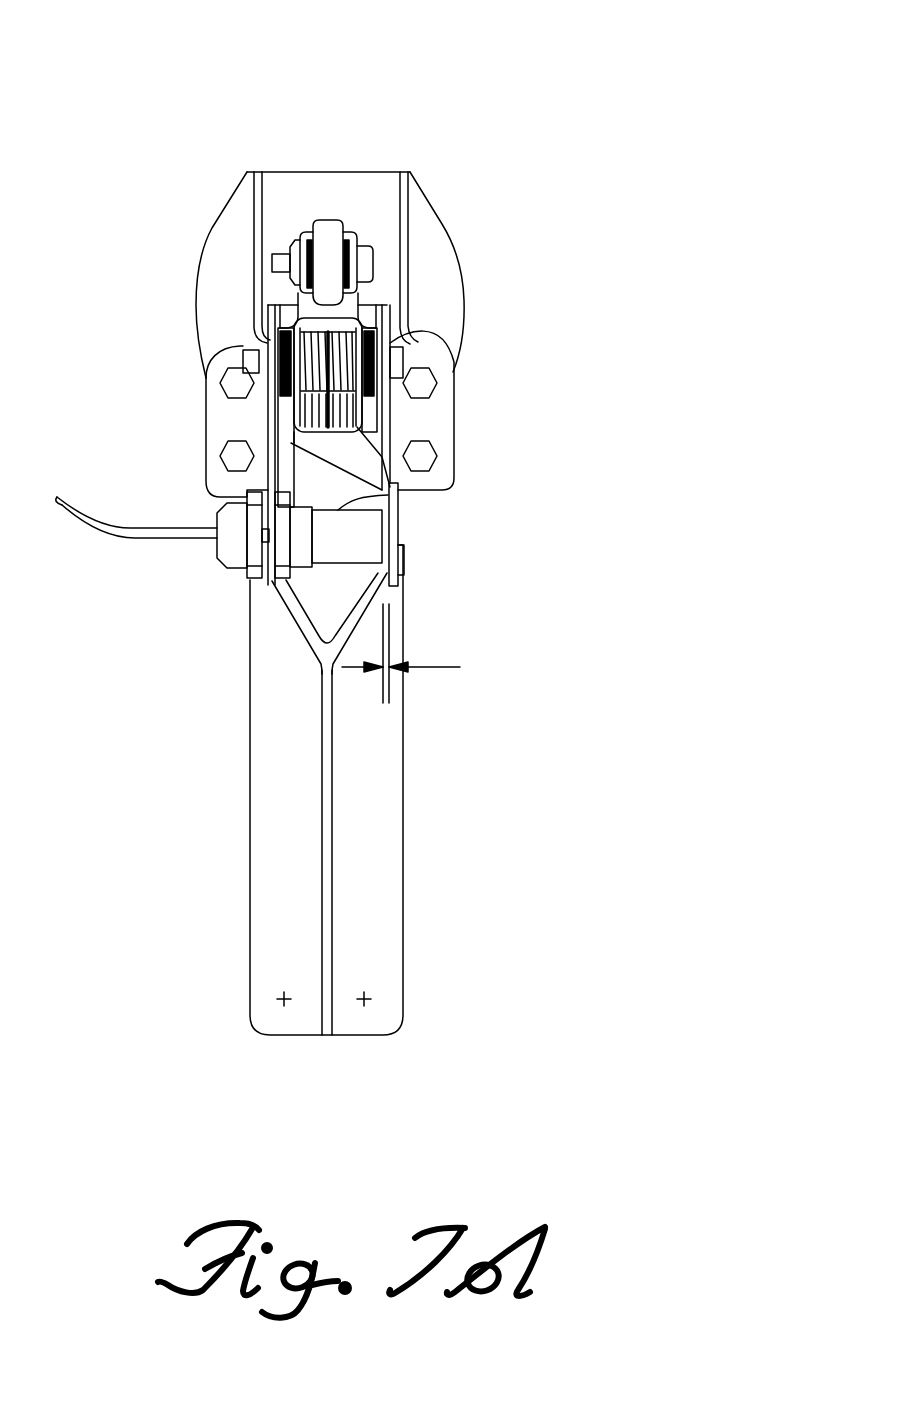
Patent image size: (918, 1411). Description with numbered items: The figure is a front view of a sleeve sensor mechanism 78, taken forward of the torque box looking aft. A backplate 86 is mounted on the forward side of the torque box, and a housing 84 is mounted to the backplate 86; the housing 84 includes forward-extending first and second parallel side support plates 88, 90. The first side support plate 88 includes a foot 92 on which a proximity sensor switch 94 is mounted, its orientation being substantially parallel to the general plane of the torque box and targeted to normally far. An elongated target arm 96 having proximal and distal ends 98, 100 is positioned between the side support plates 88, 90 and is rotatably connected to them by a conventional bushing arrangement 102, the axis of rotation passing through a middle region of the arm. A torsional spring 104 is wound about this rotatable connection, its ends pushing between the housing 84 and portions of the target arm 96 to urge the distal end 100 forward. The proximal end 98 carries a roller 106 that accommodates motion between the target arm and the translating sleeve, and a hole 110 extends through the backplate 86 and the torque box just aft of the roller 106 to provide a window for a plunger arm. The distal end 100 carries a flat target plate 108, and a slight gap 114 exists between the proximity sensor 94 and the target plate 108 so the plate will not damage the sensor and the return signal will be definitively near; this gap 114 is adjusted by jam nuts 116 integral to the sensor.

The sleeve sensor mechanism 78 is at (121, 143).
The housing 84 is at (260, 757).
The backplate 86 is at (428, 230).
The first side support plate 88 is at (320, 422).
The second side support plate 90 is at (390, 413).
The foot 92 is at (267, 582).
The proximity sensor switch 94 is at (393, 553).
The target arm 96 is at (350, 450).
The proximal end 98 is at (360, 230).
The distal end 100 is at (372, 452).
The bushing arrangement 102 is at (400, 349).
The torsional spring 104 is at (322, 412).
The roller 106 is at (328, 227).
The flat target plate 108 is at (357, 547).
The hole 110 is at (296, 233).
The gap 114 is at (435, 667).
The jam nuts 116 is at (270, 527).